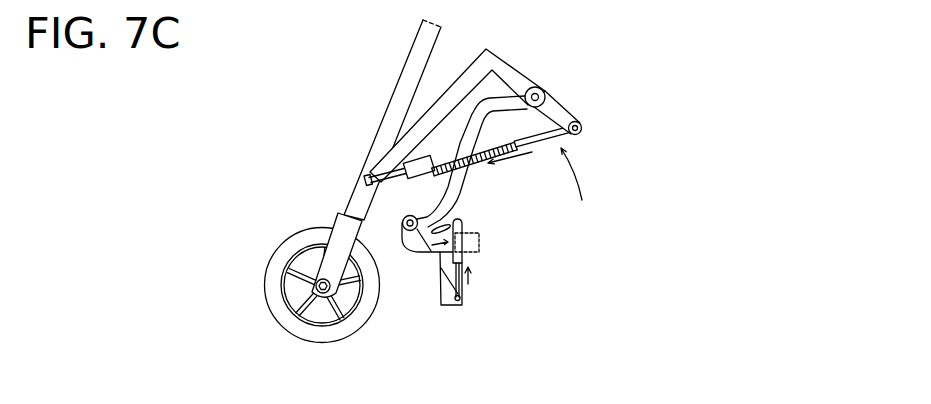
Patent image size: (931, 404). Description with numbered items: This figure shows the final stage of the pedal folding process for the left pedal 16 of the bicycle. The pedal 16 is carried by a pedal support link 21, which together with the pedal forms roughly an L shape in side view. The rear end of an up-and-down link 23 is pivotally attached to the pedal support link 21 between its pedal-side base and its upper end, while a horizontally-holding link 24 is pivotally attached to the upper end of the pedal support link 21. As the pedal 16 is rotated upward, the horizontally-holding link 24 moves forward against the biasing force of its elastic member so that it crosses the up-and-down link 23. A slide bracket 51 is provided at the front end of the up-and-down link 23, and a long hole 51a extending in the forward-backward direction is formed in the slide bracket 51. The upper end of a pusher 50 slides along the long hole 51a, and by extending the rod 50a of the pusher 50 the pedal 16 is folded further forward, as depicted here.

The left pedal 16 is at (423, 132).
The pedal support link 21 is at (565, 112).
The up-and-down link 23 is at (493, 103).
The horizontally-holding link 24 is at (552, 140).
The pusher 50 is at (478, 250).
The rod 50a is at (468, 297).
The slide bracket 51 is at (403, 246).
The long hole 51a is at (423, 230).